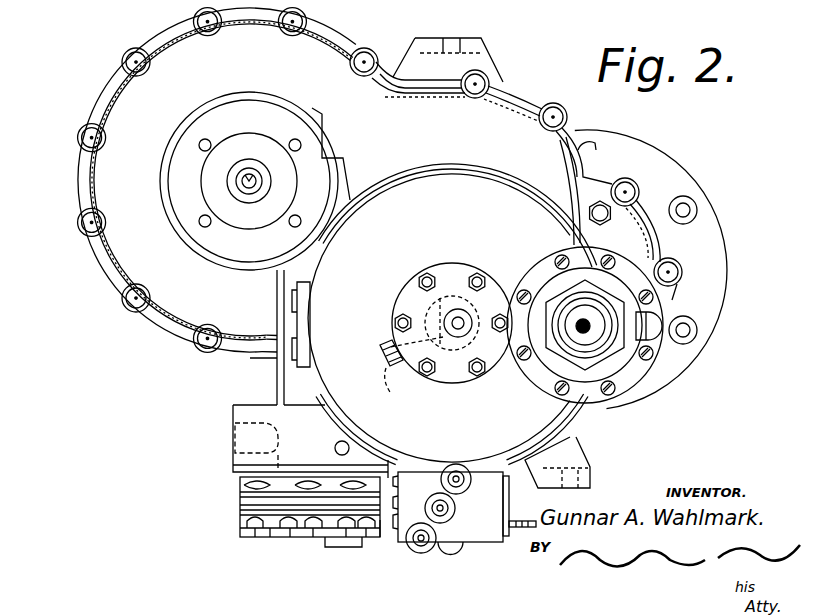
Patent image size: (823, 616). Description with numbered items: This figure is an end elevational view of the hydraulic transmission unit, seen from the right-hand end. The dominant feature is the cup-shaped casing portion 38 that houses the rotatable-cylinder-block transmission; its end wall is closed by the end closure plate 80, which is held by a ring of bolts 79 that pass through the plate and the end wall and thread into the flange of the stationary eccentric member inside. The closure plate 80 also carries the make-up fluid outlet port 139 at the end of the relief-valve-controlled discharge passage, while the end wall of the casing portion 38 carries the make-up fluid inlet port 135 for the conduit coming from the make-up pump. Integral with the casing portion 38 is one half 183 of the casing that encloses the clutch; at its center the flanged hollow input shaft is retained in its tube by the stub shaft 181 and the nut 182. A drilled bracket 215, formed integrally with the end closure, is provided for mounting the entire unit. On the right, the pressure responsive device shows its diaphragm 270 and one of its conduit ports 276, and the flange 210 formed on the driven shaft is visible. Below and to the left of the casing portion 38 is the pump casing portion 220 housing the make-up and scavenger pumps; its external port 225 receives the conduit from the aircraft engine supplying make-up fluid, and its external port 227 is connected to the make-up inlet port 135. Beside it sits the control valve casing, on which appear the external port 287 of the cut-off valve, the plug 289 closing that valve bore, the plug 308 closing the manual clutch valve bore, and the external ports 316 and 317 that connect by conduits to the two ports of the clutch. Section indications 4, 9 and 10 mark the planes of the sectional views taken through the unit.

The clutch casing portion half 183 is at (157, 105).
The stub shaft 181 is at (237, 165).
The nut 182 is at (240, 181).
The drilled bracket 215 is at (478, 47).
The casing portion 38 is at (393, 259).
The end closure plate 80 is at (456, 383).
The bolts 79 is at (476, 274).
The make-up fluid outlet port 139 is at (465, 316).
The make-up fluid inlet port 135 is at (406, 374).
The diaphragm 270 is at (602, 421).
The port 276 is at (660, 344).
The section line 9 is at (660, 245).
The section line 10 is at (377, 325).
The section line 4 is at (424, 147).
The flange 210 is at (586, 458).
The external port 225 is at (234, 428).
The external port 227 is at (336, 444).
The pump casing portion 220 is at (246, 500).
The plug 289 is at (399, 492).
The external port 287 is at (460, 473).
The external port 317 is at (448, 510).
The external port 316 is at (410, 548).
The plug 308 is at (392, 536).